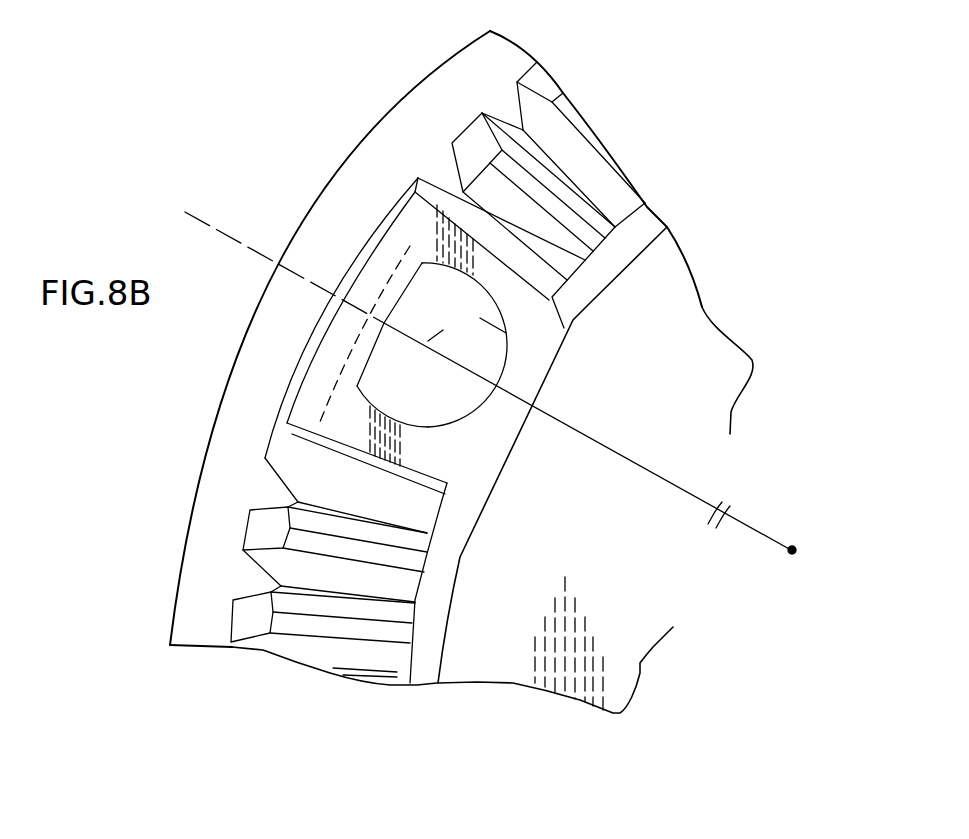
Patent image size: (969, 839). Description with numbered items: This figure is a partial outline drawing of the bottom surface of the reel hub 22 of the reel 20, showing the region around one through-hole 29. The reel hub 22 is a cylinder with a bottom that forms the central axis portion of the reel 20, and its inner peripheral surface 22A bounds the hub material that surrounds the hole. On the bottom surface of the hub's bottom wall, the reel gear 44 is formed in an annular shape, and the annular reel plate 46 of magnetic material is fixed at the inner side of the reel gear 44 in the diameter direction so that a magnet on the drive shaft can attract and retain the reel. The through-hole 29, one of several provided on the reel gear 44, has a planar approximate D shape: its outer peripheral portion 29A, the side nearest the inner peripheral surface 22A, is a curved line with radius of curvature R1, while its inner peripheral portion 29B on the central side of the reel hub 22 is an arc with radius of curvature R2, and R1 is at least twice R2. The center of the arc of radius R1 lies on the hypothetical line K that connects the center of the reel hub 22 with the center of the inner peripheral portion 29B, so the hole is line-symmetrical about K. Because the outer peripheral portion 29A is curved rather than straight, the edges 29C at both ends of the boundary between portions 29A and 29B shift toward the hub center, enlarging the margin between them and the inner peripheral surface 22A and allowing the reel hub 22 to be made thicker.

The reel 20 is at (486, 372).
The reel hub 22 is at (669, 228).
The inner peripheral surface 22A is at (412, 262).
The through-hole 29 is at (452, 278).
The outer peripheral portion 29A is at (382, 335).
The inner peripheral portion 29B is at (432, 426).
The edges 29C is at (421, 262).
The reel gear 44 is at (553, 133).
The reel plate 46 is at (663, 268).
The hypothetical line K is at (206, 222).
The radius of curvature R1 is at (789, 551).
The radius of curvature R2 is at (467, 324).